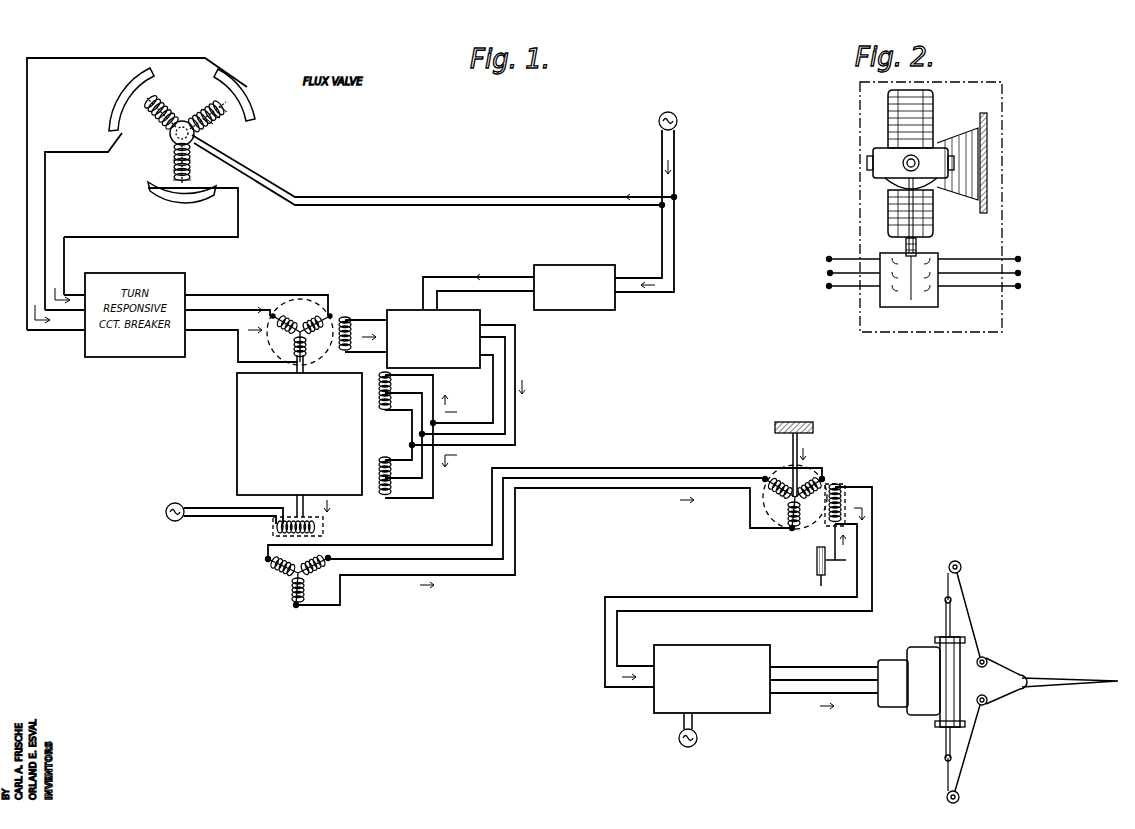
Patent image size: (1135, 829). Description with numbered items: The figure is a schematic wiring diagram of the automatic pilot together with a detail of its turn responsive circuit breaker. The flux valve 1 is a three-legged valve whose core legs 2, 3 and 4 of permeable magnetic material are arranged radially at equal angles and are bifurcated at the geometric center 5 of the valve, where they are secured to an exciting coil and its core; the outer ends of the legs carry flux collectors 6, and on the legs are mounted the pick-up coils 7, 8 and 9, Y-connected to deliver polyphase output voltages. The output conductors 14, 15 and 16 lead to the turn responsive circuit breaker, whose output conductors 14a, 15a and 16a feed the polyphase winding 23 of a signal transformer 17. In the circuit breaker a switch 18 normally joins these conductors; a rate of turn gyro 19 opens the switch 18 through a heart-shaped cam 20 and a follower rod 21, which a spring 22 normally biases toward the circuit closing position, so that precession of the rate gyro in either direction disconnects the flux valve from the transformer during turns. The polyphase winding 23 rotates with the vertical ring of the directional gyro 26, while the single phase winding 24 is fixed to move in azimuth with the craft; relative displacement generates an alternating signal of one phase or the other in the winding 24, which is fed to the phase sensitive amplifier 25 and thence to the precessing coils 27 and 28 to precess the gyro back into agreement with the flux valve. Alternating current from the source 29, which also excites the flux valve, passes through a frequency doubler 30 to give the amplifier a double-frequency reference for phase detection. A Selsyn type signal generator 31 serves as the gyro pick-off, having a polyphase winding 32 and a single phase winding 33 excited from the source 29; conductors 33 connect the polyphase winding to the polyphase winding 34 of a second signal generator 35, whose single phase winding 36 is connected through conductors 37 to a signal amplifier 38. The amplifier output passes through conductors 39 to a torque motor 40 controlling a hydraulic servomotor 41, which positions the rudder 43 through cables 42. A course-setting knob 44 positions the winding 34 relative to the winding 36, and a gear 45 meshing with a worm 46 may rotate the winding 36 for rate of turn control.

In FIG. 1, the flux valve 1 is at (188, 54).
In FIG. 1, the leg 2 is at (158, 112).
In FIG. 1, the leg 3 is at (216, 118).
In FIG. 1, the leg 4 is at (172, 151).
In FIG. 1, the central hub 5 is at (170, 140).
In FIG. 1, the flux collectors 6 is at (27, 95).
In FIG. 1, the pick-up coil 7 is at (148, 132).
In FIG. 1, the pick-up coil 8 is at (211, 110).
In FIG. 1, the pick-up coil 9 is at (192, 176).
In FIG. 1, the output conductor 14 is at (66, 256).
In FIG. 2, the output conductor 14 is at (826, 258).
In FIG. 1, the output conductor 15 is at (45, 189).
In FIG. 2, the output conductor 15 is at (826, 273).
In FIG. 2, the output conductor 16 is at (824, 287).
In FIG. 1, the output conductor 14a is at (237, 299).
In FIG. 2, the output conductor 14a is at (1018, 259).
In FIG. 1, the output conductor 15a is at (240, 316).
In FIG. 2, the output conductor 15a is at (1020, 274).
In FIG. 1, the output conductor 16a is at (240, 336).
In FIG. 2, the output conductor 16a is at (1020, 289).
In FIG. 1, the signal transformer 17 is at (341, 313).
In FIG. 2, the switch 18 is at (920, 310).
In FIG. 2, the rate of turn gyro 19 is at (935, 104).
In FIG. 2, the heart-shaped cam 20 is at (880, 188).
In FIG. 2, the follower rod 21 is at (935, 222).
In FIG. 2, the spring 22 is at (918, 251).
In FIG. 1, the polyphase winding 23 is at (309, 326).
In FIG. 1, the single phase winding 24 is at (353, 326).
In FIG. 1, the phase sensitive amplifier 25 is at (479, 315).
In FIG. 1, the directional gyro 26 is at (237, 400).
In FIG. 1, the precessing coil 27 is at (402, 428).
In FIG. 1, the precessing coil 28 is at (400, 456).
In FIG. 1, the alternating current source 29 is at (660, 116).
In FIG. 1, the frequency doubler 30 is at (574, 263).
In FIG. 1, the signal generator 31 is at (254, 573).
In FIG. 1, the polyphase winding 32 is at (285, 583).
In FIG. 1, the single phase winding 33 is at (330, 532).
In FIG. 1, the polyphase winding 34 is at (786, 503).
In FIG. 1, the second signal generator 35 is at (839, 470).
In FIG. 1, the single phase winding 36 is at (848, 488).
In FIG. 1, the conductors 37 is at (726, 610).
In FIG. 1, the signal amplifier 38 is at (738, 706).
In FIG. 1, the conductors 39 is at (804, 694).
In FIG. 1, the torque motor 40 is at (880, 707).
In FIG. 1, the hydraulic servomotor 41 is at (912, 646).
In FIG. 1, the cables 42 is at (975, 640).
In FIG. 1, the rudder 43 is at (1068, 668).
In FIG. 1, the course-setting knob 44 is at (774, 426).
In FIG. 1, the gear 45 is at (845, 566).
In FIG. 1, the worm 46 is at (816, 560).